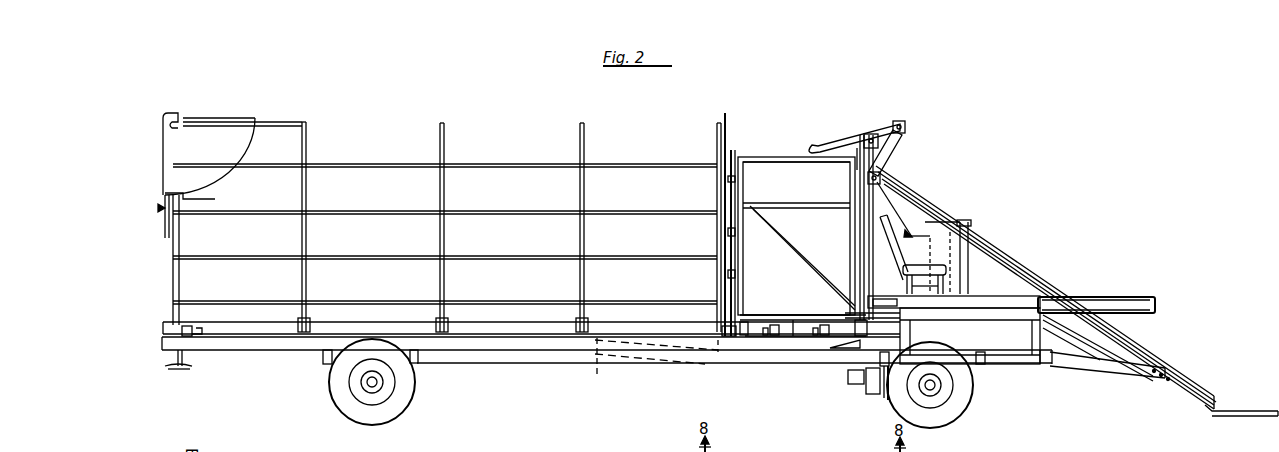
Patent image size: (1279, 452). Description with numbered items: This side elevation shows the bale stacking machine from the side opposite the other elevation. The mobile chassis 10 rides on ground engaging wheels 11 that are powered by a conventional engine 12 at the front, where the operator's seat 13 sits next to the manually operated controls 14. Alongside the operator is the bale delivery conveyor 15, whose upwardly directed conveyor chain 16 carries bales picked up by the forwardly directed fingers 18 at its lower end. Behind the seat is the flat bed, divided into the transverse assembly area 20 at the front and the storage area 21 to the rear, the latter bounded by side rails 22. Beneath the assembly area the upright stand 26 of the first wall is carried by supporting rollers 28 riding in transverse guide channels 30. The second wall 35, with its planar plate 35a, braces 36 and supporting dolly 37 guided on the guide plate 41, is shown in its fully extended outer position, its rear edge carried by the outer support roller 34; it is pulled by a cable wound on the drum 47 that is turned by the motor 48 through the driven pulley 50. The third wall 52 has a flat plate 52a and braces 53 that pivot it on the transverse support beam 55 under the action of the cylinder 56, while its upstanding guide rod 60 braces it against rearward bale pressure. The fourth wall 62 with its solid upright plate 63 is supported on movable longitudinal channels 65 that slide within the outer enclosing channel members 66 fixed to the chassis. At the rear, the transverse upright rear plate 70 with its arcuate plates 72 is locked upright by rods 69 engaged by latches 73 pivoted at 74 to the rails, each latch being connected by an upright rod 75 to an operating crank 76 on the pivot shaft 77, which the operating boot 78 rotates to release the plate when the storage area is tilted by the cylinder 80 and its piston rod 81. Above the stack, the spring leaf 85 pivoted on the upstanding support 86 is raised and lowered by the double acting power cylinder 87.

The mobile chassis 10 is at (553, 356).
The ground engaging wheels 11 is at (338, 392).
The engine 12 is at (994, 346).
The seat 13 is at (925, 263).
The manually operated controls 14 is at (966, 228).
The bale delivery conveyor 15 is at (1037, 268).
The conveyor chain 16 is at (1085, 332).
The forwardly directed fingers 18 is at (1243, 410).
The transverse assembly area 20 is at (762, 322).
The storage area 21 is at (516, 322).
The rails 22 is at (303, 135).
The upright stand 26 is at (793, 322).
The supporting rollers 28 is at (771, 324).
The transverse guide channels 30 is at (776, 326).
The outer support roller 34 is at (740, 330).
The second wall 35 is at (765, 154).
The planar plate 35a is at (786, 160).
The braces 36 is at (860, 268).
The supporting dolly 37 is at (867, 325).
The guide plate 41 is at (843, 344).
The winch or drum 47 is at (850, 385).
The motor 48 is at (870, 392).
The driven pulley 50 is at (886, 400).
The third wall 52 is at (733, 152).
The flat plate 52a is at (728, 179).
The braces 53 is at (728, 232).
The transverse support beam 55 is at (720, 333).
The cylinder 56 is at (728, 275).
The upstanding guide rod 60 is at (727, 120).
The fourth wall 62 is at (858, 187).
The solid upright plate 63 is at (858, 229).
The movable longitudinal channels 65 is at (1090, 298).
The outer enclosing channel members 66 is at (953, 312).
The outwardly protruding rods 69 is at (165, 226).
The transverse upright rear plate 70 is at (164, 128).
The perpendicular arcuate plates 72 is at (207, 162).
The latches 73 is at (158, 209).
The latch pivot 74 is at (192, 211).
The upright rod 75 is at (180, 240).
The operating crank 76 is at (190, 337).
The pivot shaft 77 is at (200, 330).
The operating boot 78 is at (179, 369).
The cylinder 80 is at (645, 362).
The piston rod 81 is at (598, 370).
The spring leaf 85 is at (859, 138).
The upstanding support 86 is at (860, 160).
The double acting power cylinder 87 is at (884, 152).